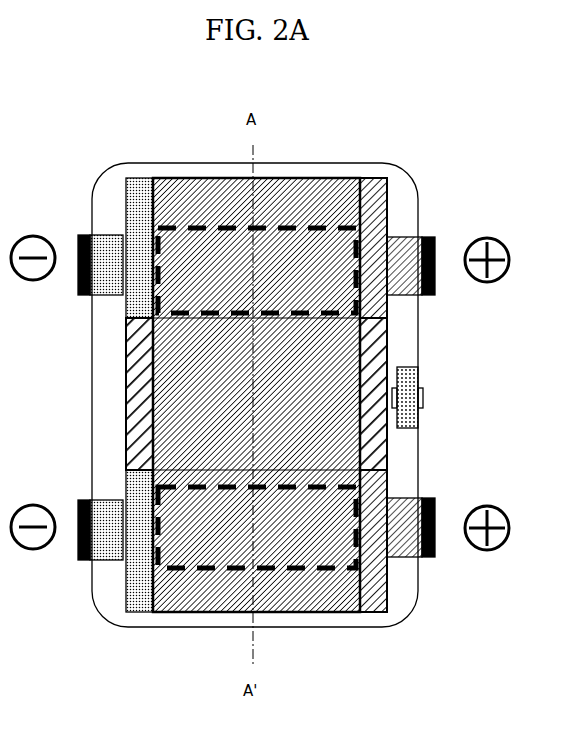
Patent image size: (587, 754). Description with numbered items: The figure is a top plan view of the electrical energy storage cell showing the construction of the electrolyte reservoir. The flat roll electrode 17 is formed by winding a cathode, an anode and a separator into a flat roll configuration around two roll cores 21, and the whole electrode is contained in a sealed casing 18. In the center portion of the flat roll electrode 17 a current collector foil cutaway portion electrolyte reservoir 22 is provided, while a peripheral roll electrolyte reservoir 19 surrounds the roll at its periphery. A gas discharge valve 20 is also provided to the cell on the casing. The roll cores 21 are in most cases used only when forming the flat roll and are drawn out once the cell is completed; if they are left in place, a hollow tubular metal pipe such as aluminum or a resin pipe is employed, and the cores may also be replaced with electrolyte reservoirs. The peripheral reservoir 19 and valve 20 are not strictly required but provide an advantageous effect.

The flat roll electrode 17 is at (400, 200).
The sealed casing 18 is at (318, 627).
The peripheral roll electrolyte reservoir 19 is at (212, 203).
The gas discharge valve 20 is at (418, 387).
The roll cores 21 is at (306, 224).
The current collector foil cutaway portion electrolyte reservoir 22 is at (133, 423).